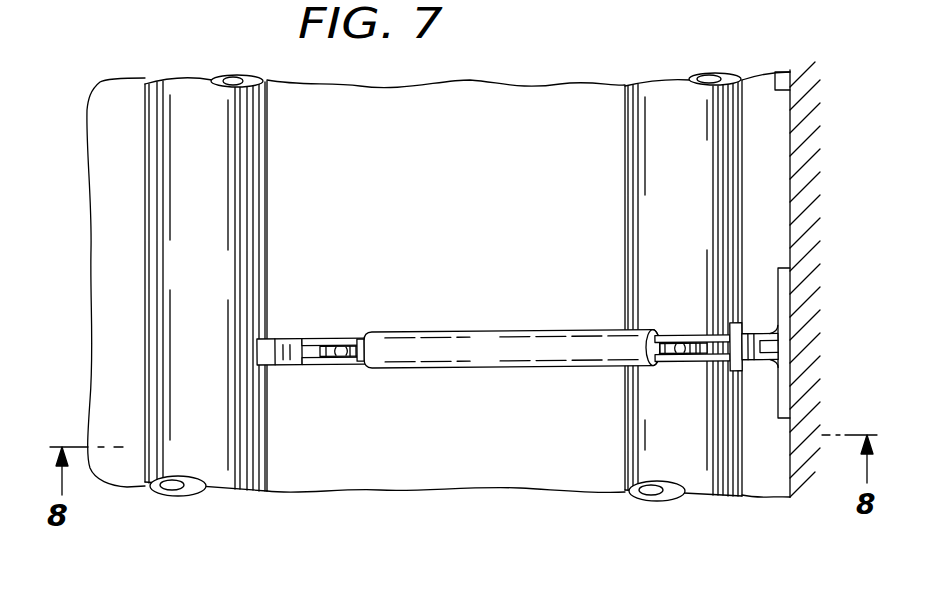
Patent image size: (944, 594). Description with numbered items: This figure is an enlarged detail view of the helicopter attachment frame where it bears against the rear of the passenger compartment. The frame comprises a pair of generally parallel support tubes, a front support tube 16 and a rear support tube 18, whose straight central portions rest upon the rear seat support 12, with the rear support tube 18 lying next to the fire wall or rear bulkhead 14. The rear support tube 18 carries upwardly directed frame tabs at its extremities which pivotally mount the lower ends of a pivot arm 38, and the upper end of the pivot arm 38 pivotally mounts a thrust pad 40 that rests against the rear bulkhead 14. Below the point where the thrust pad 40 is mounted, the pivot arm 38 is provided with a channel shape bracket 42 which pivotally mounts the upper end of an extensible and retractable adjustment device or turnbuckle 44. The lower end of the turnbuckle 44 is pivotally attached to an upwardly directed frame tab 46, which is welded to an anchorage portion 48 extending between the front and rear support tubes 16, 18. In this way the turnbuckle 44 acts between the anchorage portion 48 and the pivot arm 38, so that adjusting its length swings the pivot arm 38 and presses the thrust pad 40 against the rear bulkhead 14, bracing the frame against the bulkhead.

The rear seat support 12 is at (503, 107).
The rear bulkhead 14 is at (777, 87).
The front support tube 16 is at (188, 87).
The rear support tube 18 is at (677, 88).
The pivot arm 38 is at (753, 343).
The thrust pad 40 is at (791, 292).
The channel shape bracket 42 is at (695, 358).
The turnbuckle 44 is at (478, 338).
The frame tab 46 is at (308, 363).
The anchorage portion 48 is at (285, 340).